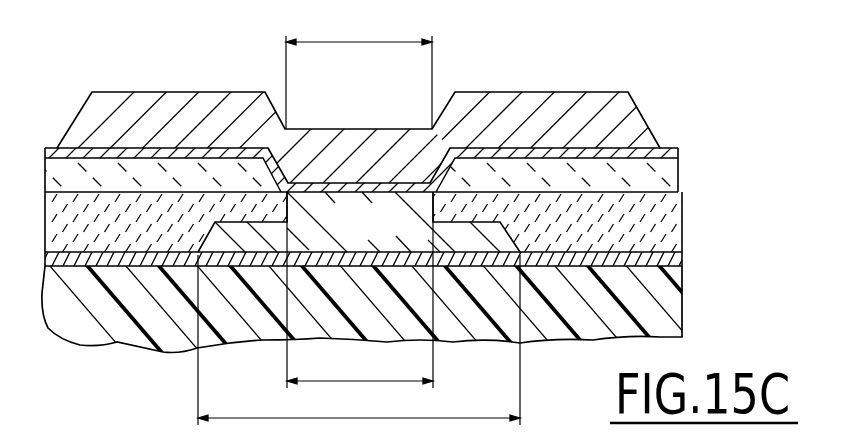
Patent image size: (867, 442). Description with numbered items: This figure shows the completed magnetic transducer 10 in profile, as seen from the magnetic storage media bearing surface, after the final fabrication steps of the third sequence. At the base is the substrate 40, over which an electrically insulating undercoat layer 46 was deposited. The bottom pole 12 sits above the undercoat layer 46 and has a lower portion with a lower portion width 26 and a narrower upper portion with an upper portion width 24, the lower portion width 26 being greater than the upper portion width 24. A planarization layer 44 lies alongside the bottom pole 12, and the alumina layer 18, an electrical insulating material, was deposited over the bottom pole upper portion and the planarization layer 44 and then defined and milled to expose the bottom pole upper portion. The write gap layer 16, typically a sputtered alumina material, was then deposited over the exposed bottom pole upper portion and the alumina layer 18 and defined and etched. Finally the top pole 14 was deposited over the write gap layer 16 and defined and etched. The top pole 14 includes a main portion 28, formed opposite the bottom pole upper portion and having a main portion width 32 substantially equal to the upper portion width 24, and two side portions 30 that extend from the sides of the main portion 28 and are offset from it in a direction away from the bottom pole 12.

The magnetic transducer 10 is at (751, 65).
The bottom pole 12 is at (377, 232).
The top pole 14 is at (647, 101).
The write gap layer 16 is at (682, 148).
The alumina layer 18 is at (682, 170).
The upper portion width 24 is at (360, 290).
The lower portion width 26 is at (359, 340).
The main portion 28 is at (344, 128).
The side portions 30 is at (187, 92).
The main portion width 32 is at (359, 68).
The substrate 40 is at (682, 308).
The planarization layer 44 is at (677, 213).
The undercoat layer 46 is at (680, 260).